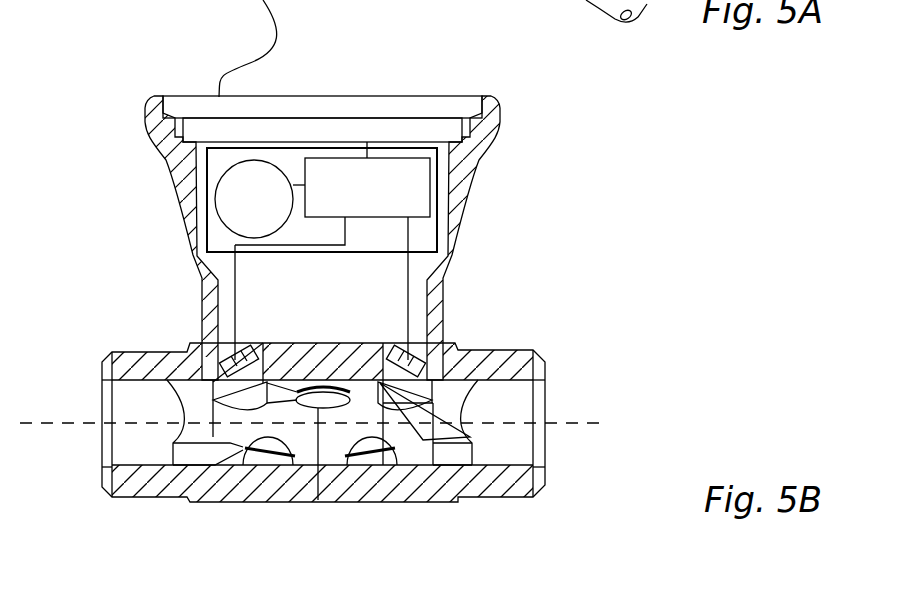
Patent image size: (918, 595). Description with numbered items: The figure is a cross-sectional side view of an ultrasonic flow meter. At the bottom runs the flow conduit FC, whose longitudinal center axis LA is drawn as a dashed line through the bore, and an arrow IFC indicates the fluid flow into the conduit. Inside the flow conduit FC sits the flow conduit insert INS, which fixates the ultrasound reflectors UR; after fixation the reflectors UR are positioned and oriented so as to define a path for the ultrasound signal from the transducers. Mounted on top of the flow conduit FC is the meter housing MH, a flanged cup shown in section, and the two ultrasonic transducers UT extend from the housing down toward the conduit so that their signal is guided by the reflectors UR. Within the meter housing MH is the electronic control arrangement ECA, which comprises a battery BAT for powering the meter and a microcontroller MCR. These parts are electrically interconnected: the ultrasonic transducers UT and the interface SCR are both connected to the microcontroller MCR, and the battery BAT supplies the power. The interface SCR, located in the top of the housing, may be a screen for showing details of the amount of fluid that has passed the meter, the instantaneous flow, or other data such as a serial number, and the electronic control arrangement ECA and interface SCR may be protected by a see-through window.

The interface SCR is at (312, 125).
The meter housing MH is at (470, 152).
The electronic control arrangement ECA is at (440, 252).
The battery BAT is at (216, 182).
The microcontroller MCR is at (370, 217).
The ultrasonic transducer UT is at (210, 353).
The flow conduit insert INS is at (178, 420).
The flow conduit FC is at (545, 358).
The inlet flow direction IFC is at (568, 435).
The longitudinal center axis LA is at (55, 425).
The ultrasound reflector UR is at (265, 462).